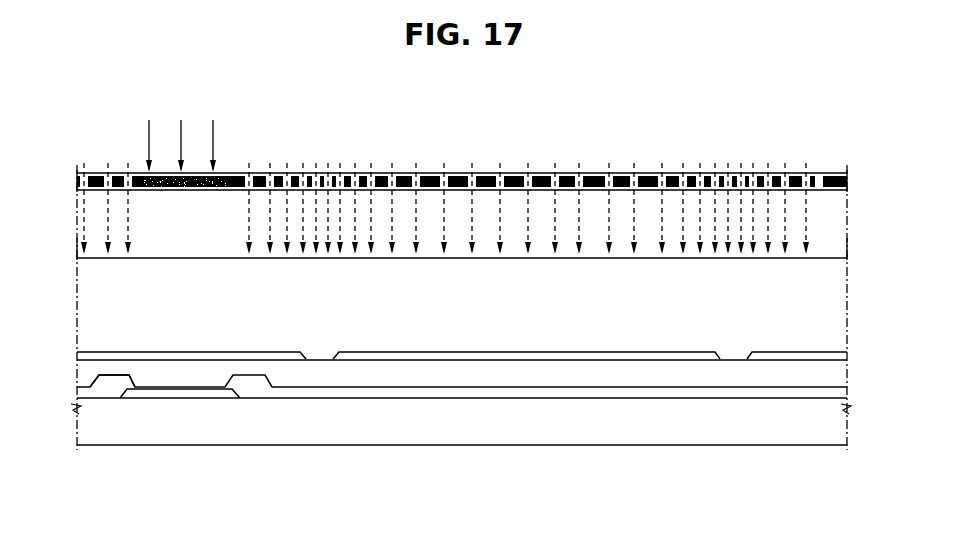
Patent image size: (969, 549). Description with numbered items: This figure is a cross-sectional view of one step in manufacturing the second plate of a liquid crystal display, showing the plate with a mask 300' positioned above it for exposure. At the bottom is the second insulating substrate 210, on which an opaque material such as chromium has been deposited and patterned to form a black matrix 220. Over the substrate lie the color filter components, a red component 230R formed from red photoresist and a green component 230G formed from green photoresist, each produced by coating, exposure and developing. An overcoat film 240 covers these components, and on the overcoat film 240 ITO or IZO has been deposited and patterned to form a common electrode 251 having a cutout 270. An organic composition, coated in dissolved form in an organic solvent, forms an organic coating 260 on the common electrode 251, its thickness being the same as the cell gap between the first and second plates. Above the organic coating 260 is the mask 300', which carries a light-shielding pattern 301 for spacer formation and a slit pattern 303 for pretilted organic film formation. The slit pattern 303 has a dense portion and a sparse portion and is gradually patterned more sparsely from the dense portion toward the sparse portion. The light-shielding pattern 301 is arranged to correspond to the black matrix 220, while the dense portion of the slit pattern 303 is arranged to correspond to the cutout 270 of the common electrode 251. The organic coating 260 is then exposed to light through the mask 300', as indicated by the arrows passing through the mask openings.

The mask 300' is at (462, 170).
The slit pattern 303 is at (257, 172).
The light-shielding pattern 301 is at (168, 190).
The second insulating substrate 210 is at (170, 430).
The black matrix 220 is at (218, 393).
The green component 230G is at (106, 385).
The red component 230R is at (340, 393).
The overcoat film 240 is at (443, 373).
The common electrode 251 is at (532, 353).
The organic coating 260 is at (593, 318).
The cutout 270 is at (318, 353).